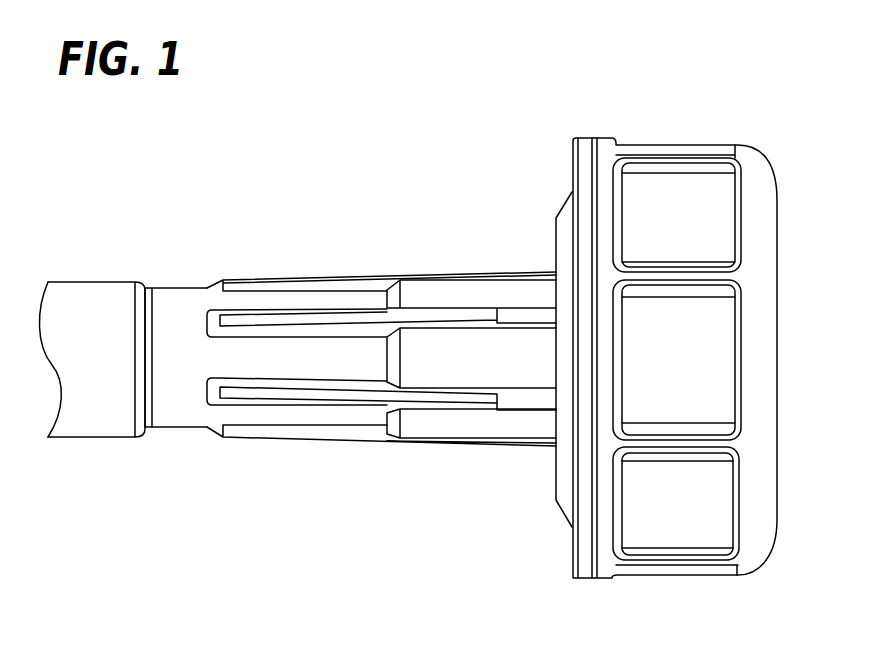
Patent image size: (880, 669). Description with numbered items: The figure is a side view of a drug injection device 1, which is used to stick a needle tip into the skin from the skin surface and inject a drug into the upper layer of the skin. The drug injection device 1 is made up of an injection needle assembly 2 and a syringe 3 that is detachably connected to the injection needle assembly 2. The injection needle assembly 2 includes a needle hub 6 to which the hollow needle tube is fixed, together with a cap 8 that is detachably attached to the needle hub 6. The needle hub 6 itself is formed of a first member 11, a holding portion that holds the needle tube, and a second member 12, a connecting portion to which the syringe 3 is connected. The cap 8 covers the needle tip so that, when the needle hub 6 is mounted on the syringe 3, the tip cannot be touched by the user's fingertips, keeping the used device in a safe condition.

The drug injection device 1 is at (688, 120).
The injection needle assembly 2 is at (395, 492).
The syringe 3 is at (96, 247).
The needle hub 6 is at (420, 271).
The cap 8 is at (668, 538).
The first member 11 is at (563, 214).
The second member 12 is at (172, 415).